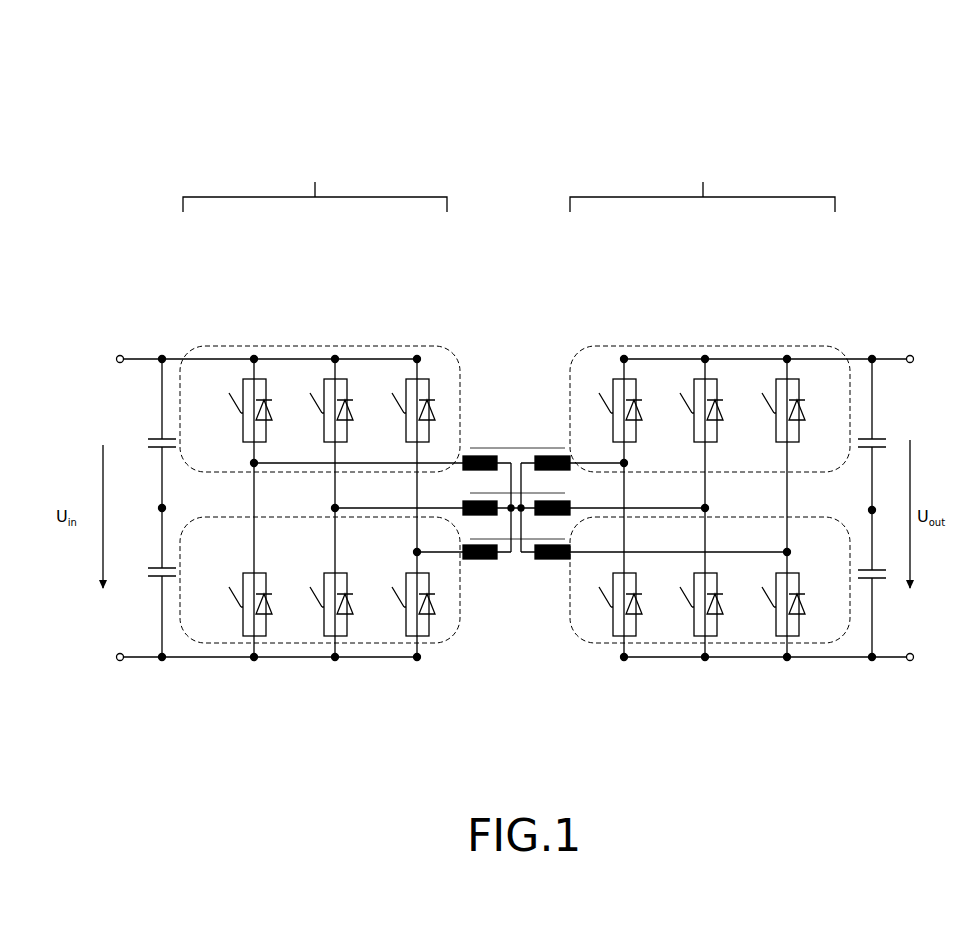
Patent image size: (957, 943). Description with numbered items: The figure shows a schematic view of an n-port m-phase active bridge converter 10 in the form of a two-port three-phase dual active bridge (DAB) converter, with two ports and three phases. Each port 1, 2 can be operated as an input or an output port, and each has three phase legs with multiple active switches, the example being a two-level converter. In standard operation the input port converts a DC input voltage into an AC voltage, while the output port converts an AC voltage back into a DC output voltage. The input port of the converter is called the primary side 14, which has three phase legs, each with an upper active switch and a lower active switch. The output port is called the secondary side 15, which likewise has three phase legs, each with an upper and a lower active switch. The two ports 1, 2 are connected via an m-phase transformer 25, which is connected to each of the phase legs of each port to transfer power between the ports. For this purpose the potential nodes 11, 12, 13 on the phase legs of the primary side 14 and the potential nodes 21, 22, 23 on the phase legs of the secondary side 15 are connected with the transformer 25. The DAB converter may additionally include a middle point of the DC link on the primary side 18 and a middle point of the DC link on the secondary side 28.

The n-port m-phase active bridge converter 10 is at (516, 146).
The port 1 is at (514, 486).
The port 2 is at (701, 486).
The primary side 14 is at (180, 328).
The secondary side 15 is at (845, 328).
The potential node 11 is at (249, 462).
The potential node 12 is at (331, 507).
The potential node 13 is at (413, 551).
The potential node 21 is at (633, 464).
The potential node 22 is at (715, 508).
The potential node 23 is at (797, 551).
The middle point of the DC link on the primary side 18 is at (153, 508).
The middle point of the DC link on the secondary side 28 is at (881, 508).
The m-phase transformer 25 is at (513, 566).